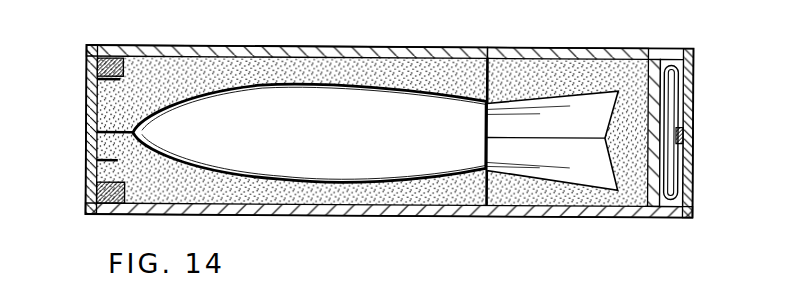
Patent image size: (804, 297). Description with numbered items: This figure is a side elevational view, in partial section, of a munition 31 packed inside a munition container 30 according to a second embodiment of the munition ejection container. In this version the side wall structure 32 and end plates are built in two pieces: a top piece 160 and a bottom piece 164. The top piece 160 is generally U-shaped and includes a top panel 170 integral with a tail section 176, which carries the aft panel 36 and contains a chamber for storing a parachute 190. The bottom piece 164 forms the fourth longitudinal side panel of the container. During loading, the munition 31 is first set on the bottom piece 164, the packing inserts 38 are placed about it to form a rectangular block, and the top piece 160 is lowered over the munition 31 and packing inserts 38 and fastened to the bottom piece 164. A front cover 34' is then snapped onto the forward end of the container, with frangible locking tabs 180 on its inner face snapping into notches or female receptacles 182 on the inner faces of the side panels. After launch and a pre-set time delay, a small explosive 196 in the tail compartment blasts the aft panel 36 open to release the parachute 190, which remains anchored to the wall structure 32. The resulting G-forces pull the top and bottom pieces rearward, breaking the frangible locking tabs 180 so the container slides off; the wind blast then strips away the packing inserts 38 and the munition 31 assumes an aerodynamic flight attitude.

The munition container 30 is at (403, 50).
The munition 31 is at (328, 100).
The side wall structure 32 is at (537, 50).
The front cover 34' is at (66, 129).
The aft panel 36 is at (695, 105).
The packing inserts 38 is at (197, 63).
The top piece 160 is at (280, 50).
The bottom piece 164 is at (358, 213).
The top panel 170 is at (640, 50).
The tail section 176 is at (670, 90).
The frangible locking tabs 180 is at (94, 83).
The notches or female receptacles 182 is at (121, 73).
The parachute 190 is at (676, 170).
The small explosive 196 is at (688, 127).